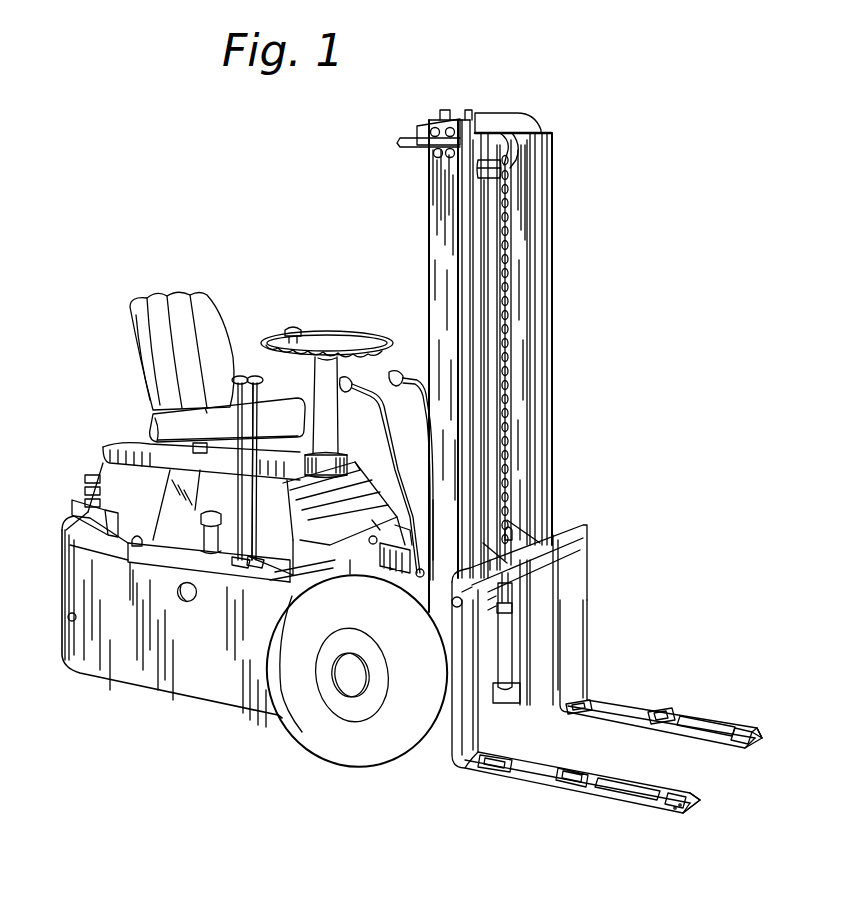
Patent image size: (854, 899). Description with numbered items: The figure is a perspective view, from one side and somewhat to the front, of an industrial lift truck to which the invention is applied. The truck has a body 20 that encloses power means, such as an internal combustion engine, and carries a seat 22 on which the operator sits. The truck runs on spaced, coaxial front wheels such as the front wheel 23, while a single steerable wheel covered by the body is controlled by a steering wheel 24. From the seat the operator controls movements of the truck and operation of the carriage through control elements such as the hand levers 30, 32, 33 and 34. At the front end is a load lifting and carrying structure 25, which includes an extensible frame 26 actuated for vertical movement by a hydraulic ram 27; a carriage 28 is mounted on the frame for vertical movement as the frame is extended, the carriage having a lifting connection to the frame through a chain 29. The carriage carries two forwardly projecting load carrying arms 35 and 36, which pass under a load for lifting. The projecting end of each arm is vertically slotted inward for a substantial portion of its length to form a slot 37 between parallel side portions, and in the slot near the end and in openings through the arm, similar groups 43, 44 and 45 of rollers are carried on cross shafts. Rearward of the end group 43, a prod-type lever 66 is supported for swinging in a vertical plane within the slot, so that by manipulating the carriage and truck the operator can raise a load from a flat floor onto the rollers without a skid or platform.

The body 20 is at (93, 473).
The seat 22 is at (236, 345).
The front wheel 23 is at (407, 747).
The steering wheel 24 is at (355, 340).
The load lifting and carrying structure 25 is at (553, 296).
The extensible frame 26 is at (527, 394).
The hydraulic ram 27 is at (487, 460).
The carriage 28 is at (590, 562).
The chain 29 is at (510, 343).
The control levers 30 is at (240, 376).
The control lever 32 is at (258, 379).
The control lever 33 is at (388, 400).
The control lever 34 is at (417, 378).
The load carrying arm 35 is at (548, 783).
The load carrying arm 36 is at (635, 706).
The slot 37 is at (738, 720).
The end group of rollers 43 is at (750, 728).
The group of rollers 44 is at (655, 714).
The group of rollers 45 is at (588, 705).
The prod-type lever 66 is at (703, 718).